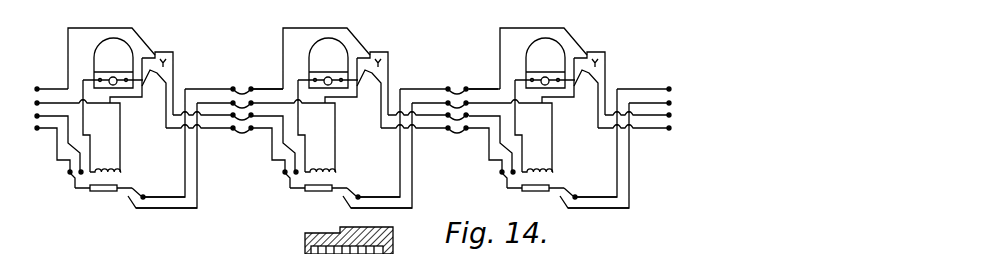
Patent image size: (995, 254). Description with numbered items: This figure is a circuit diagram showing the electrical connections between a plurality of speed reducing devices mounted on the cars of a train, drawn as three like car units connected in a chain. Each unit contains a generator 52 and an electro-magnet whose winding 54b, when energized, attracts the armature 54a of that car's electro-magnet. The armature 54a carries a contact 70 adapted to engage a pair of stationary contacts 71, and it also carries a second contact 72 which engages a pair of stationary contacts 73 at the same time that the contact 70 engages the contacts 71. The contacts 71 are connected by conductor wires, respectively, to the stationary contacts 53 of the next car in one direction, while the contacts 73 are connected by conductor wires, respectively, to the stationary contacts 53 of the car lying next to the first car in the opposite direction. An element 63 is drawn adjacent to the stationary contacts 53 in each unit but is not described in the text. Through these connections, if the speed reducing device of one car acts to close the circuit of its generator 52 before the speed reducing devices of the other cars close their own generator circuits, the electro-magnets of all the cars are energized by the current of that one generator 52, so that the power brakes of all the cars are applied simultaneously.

The generator 52 is at (329, 63).
The stationary contacts 53 is at (585, 72).
The armature 54a is at (538, 192).
The winding 54b is at (321, 157).
The armature contact 63 is at (598, 60).
The contact 70 is at (507, 184).
The stationary contacts 71 is at (511, 171).
The second contact 72 is at (582, 189).
The stationary contacts 73 is at (566, 204).